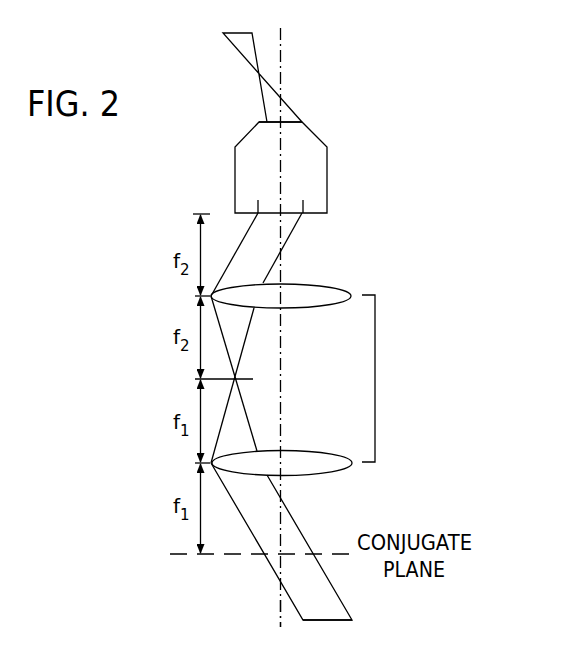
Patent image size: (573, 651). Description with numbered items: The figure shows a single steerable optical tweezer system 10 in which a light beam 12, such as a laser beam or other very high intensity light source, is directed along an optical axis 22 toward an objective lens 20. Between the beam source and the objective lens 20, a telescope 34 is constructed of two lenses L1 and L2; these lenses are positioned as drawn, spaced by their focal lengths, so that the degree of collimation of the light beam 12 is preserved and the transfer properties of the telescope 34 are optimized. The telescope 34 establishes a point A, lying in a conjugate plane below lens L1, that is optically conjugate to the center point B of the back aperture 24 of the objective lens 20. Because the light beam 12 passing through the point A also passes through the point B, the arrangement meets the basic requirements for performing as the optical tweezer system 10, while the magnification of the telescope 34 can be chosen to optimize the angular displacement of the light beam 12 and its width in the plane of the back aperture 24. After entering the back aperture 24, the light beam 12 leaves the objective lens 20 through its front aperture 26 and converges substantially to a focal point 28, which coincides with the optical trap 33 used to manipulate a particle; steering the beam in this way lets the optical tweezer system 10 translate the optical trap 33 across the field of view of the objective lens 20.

The optical tweezer system 10 is at (465, 303).
The light beam 12 is at (280, 531).
The objective lens 20 is at (317, 160).
The optical axis 22 is at (282, 617).
The back aperture 24 is at (283, 213).
The front aperture 26 is at (298, 121).
The focal point 28 is at (260, 75).
The optical trap 33 is at (271, 76).
The telescope 34 is at (375, 378).
The point A is at (340, 597).
The point B is at (292, 218).
The lens L1 is at (292, 473).
The lens L2 is at (291, 288).